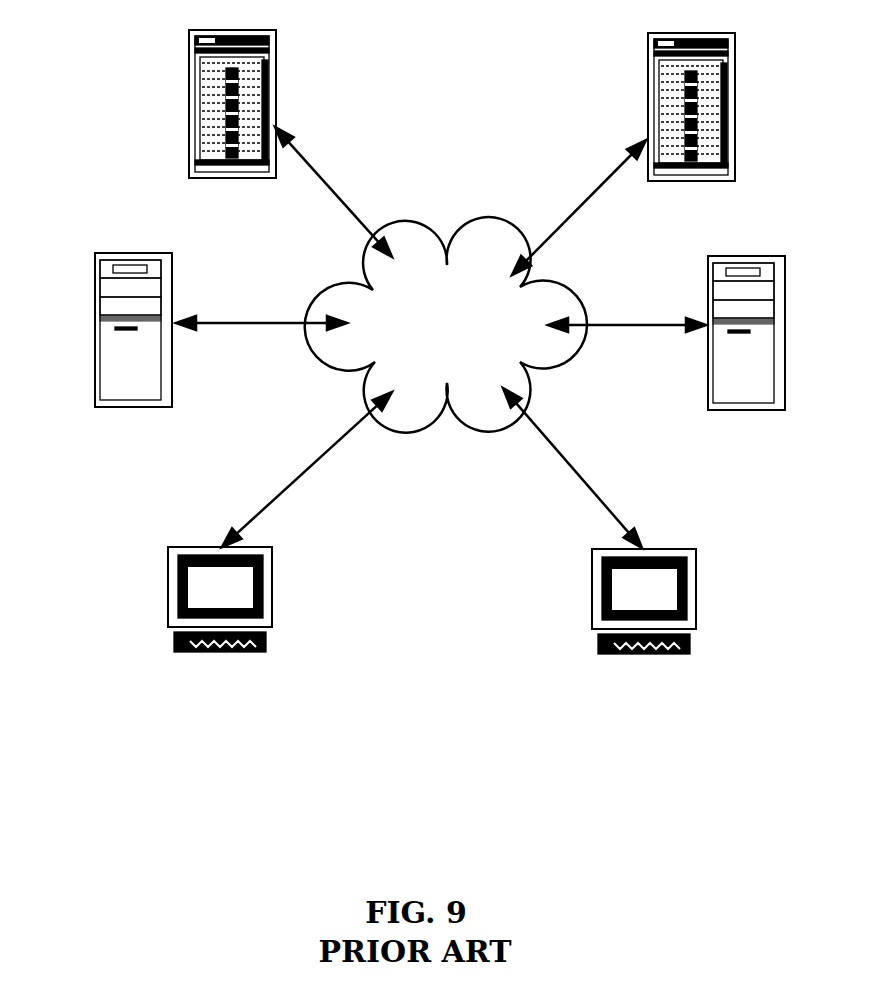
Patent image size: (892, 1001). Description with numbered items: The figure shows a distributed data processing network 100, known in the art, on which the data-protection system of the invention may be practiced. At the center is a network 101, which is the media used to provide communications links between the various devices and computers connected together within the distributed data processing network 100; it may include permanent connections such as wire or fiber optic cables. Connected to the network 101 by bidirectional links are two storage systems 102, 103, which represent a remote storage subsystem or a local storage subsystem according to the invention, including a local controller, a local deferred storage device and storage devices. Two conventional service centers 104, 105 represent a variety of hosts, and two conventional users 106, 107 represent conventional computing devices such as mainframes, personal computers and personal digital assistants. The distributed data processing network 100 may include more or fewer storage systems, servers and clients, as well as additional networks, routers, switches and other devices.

The distributed data processing network 100 is at (412, 794).
The network 101 is at (446, 325).
The storage system 102 is at (189, 103).
The storage system 103 is at (735, 98).
The service center 104 is at (95, 338).
The service center 105 is at (785, 333).
The user 106 is at (168, 598).
The user 107 is at (696, 600).